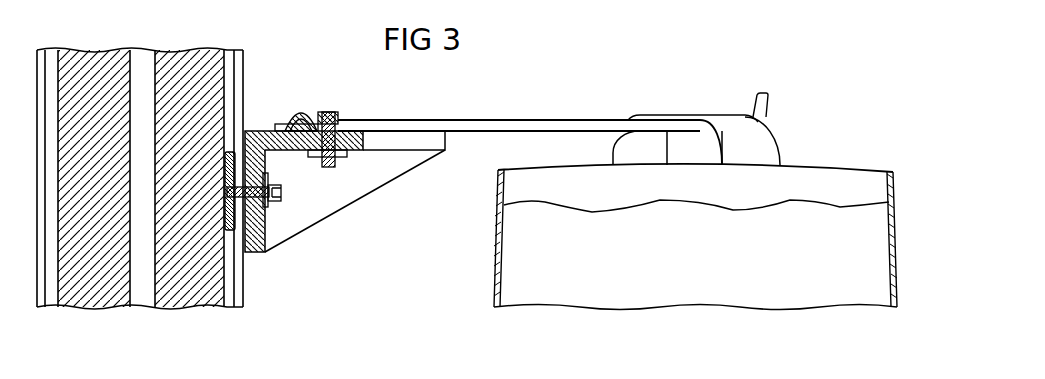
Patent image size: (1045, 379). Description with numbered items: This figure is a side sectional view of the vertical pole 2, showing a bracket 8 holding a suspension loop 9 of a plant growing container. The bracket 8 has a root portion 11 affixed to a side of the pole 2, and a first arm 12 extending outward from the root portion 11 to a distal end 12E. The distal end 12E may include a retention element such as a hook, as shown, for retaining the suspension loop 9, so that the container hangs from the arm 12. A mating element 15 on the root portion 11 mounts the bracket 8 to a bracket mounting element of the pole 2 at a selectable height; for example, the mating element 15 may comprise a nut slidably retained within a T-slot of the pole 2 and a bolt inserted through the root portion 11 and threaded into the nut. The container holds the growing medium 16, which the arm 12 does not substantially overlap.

The vertical pole 2 is at (83, 49).
The bracket 8 is at (398, 203).
The suspension loop 9 is at (613, 142).
The root portion 11 is at (254, 131).
The first arm 12 is at (502, 119).
The first distal end 12E is at (770, 102).
The mating element 15 is at (227, 172).
The growing medium 16 is at (703, 267).